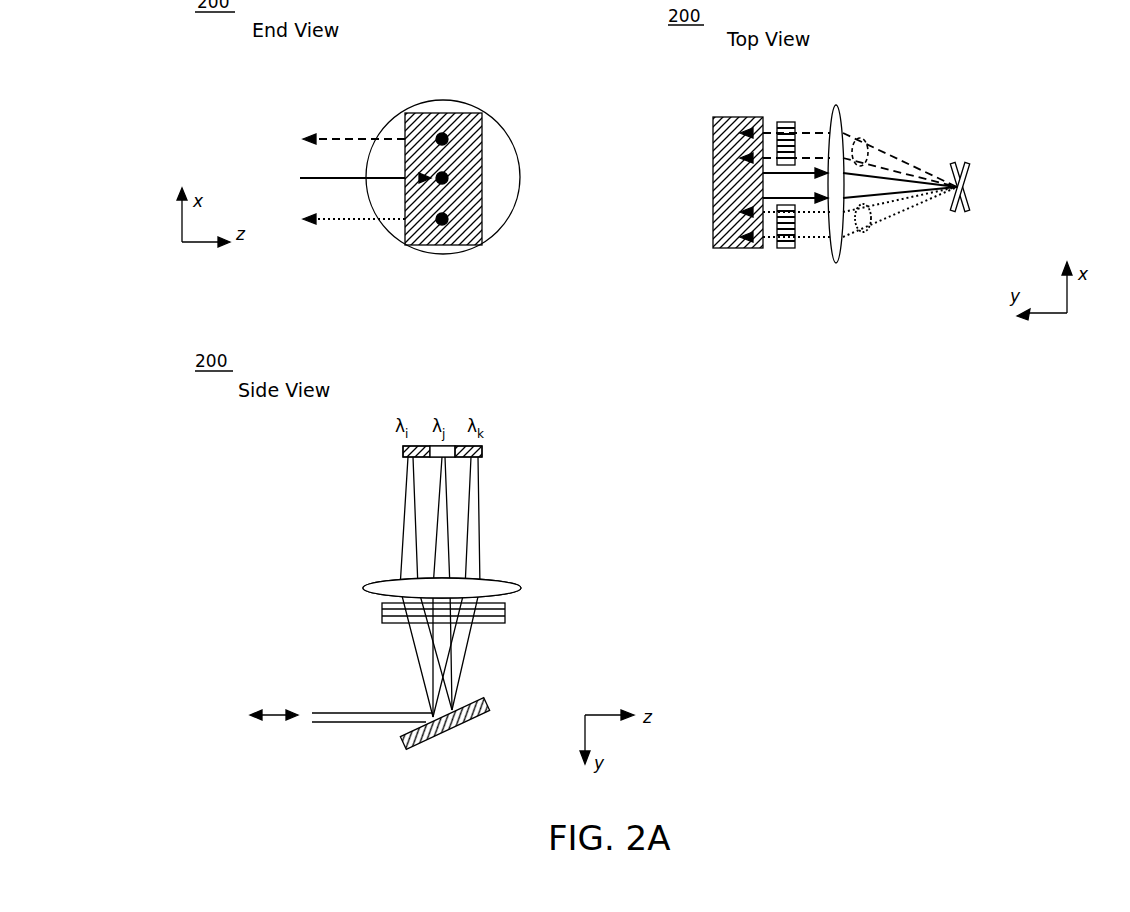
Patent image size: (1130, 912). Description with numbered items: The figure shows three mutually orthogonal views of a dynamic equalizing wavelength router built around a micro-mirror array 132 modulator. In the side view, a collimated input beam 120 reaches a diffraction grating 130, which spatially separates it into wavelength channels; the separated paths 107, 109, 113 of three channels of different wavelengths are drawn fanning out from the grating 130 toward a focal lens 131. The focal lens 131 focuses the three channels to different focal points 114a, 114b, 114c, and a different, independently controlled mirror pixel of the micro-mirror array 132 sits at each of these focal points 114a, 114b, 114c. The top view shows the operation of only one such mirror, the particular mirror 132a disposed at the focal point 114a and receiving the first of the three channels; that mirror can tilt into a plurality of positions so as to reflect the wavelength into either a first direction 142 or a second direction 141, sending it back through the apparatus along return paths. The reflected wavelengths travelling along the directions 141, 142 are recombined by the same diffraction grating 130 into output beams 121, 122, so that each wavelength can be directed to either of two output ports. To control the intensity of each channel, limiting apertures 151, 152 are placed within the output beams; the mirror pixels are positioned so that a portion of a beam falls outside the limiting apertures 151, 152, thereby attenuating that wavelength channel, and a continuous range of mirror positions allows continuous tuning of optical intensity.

The separated path of channel λi 107 is at (405, 498).
The separated path of channel λj 109 is at (437, 500).
The separated path of channel λk 113 is at (482, 543).
The focal point 114a is at (954, 163).
The focal point 114b is at (443, 460).
The focal point 114c is at (482, 458).
The collimated input beam 120 is at (318, 177).
The output beam 121 is at (342, 221).
The output beam 122 is at (342, 137).
The diffraction grating 130 is at (482, 200).
The focal lens 131 is at (513, 145).
The micro-mirror array 132 is at (497, 452).
The mirror 132a is at (965, 212).
The second direction 141 is at (870, 231).
The first direction 142 is at (865, 139).
The limiting aperture 151 is at (790, 249).
The limiting aperture 152 is at (787, 121).